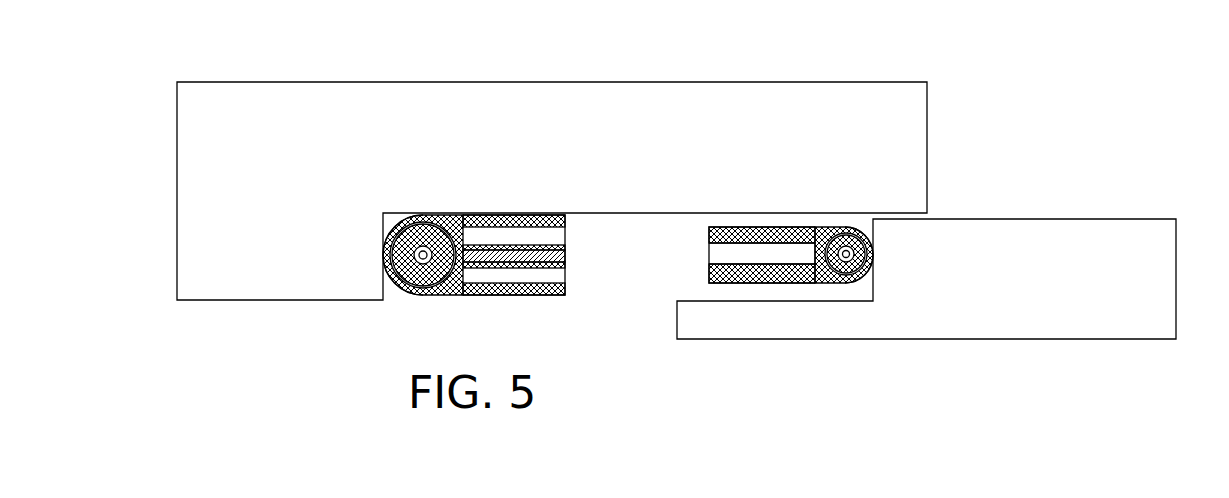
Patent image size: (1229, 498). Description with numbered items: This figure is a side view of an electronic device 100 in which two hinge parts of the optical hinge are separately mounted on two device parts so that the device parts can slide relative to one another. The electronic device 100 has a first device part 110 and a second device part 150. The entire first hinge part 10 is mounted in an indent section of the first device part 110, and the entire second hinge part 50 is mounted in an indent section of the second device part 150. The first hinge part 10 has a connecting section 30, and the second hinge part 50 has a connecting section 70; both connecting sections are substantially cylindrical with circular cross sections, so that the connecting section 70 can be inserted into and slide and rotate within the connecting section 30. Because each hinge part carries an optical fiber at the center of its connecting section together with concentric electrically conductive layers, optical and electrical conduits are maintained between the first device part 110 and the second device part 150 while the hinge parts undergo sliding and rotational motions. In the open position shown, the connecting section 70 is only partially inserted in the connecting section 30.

The electronic device 100 is at (676, 191).
The first device part 110 is at (320, 90).
The second device part 150 is at (998, 228).
The first hinge part 10 is at (481, 281).
The connecting section 30 is at (510, 302).
The second hinge part 50 is at (763, 232).
The connecting section 70 is at (703, 244).